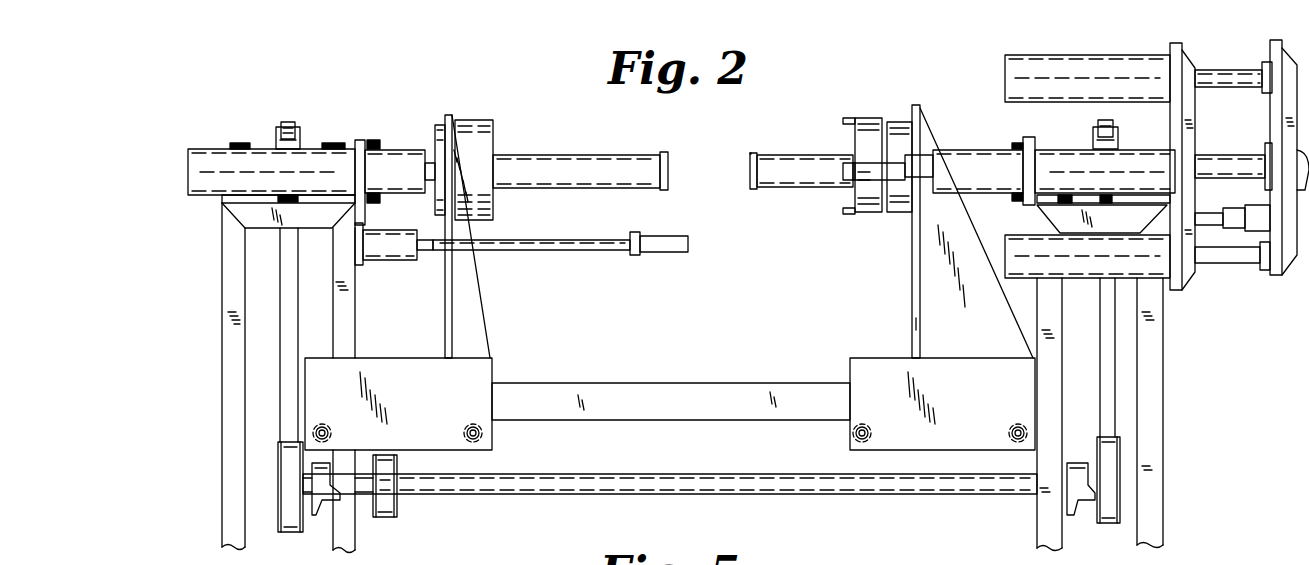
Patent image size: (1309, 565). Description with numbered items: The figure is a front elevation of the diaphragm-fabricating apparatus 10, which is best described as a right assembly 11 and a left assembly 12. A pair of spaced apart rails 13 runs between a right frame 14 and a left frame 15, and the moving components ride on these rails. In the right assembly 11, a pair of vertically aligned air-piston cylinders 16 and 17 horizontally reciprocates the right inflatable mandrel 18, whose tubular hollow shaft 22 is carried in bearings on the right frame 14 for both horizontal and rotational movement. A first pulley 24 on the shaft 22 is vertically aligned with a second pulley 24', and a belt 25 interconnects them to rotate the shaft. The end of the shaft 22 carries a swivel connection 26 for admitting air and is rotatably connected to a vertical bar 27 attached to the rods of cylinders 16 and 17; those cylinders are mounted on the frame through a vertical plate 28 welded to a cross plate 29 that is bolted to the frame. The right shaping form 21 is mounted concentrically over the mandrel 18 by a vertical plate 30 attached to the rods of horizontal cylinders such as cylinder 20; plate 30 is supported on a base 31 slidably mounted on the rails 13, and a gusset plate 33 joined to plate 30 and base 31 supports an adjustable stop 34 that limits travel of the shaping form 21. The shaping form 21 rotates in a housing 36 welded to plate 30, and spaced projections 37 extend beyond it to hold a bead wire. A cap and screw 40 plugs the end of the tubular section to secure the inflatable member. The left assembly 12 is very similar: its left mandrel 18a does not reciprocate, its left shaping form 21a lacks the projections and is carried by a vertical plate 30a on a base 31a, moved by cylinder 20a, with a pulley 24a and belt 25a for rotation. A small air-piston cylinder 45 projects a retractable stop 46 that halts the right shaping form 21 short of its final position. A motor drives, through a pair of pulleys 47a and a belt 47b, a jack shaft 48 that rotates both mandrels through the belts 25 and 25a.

The apparatus 10 is at (780, 108).
The right assembly 11 is at (995, 110).
The left assembly 12 is at (386, 121).
The rails 13 is at (612, 398).
The right frame 14 is at (1052, 428).
The left frame 15 is at (344, 336).
The air-piston cylinder 16 is at (1068, 70).
The air-piston cylinder 17 is at (1096, 266).
The right inflatable mandrel 18 is at (782, 194).
The left mandrel 18a is at (562, 148).
The air-piston cylinder 20 is at (980, 150).
The air-piston cylinder 20a is at (226, 150).
The right shaping form 21 is at (876, 214).
The left shaping form 21a is at (470, 128).
The tubular hollow shaft 22 is at (1236, 165).
The first pulley 24 is at (1079, 137).
The pulley 24a is at (300, 136).
The second pulley 24' is at (1093, 500).
The belt 25 is at (1102, 122).
The belt 25a is at (288, 122).
The swivel connection 26 is at (1302, 158).
The vertical bar 27 is at (1282, 68).
The vertical plate 28 is at (1176, 64).
The cross plate 29 is at (1160, 196).
The vertical plate 30 is at (912, 262).
The vertical plate 30a is at (450, 318).
The base 31 is at (860, 358).
The base 31a is at (492, 362).
The gusset plate 33 is at (925, 325).
The adjustable stop 34 is at (1212, 226).
The housing 36 is at (900, 124).
The projections 37 is at (852, 164).
The cap and screw 40 is at (751, 172).
The air-piston cylinder 45 is at (378, 256).
The stop 46 is at (664, 250).
The pulleys 47a is at (400, 502).
The belt 47b is at (390, 520).
The jack shaft 48 is at (658, 486).